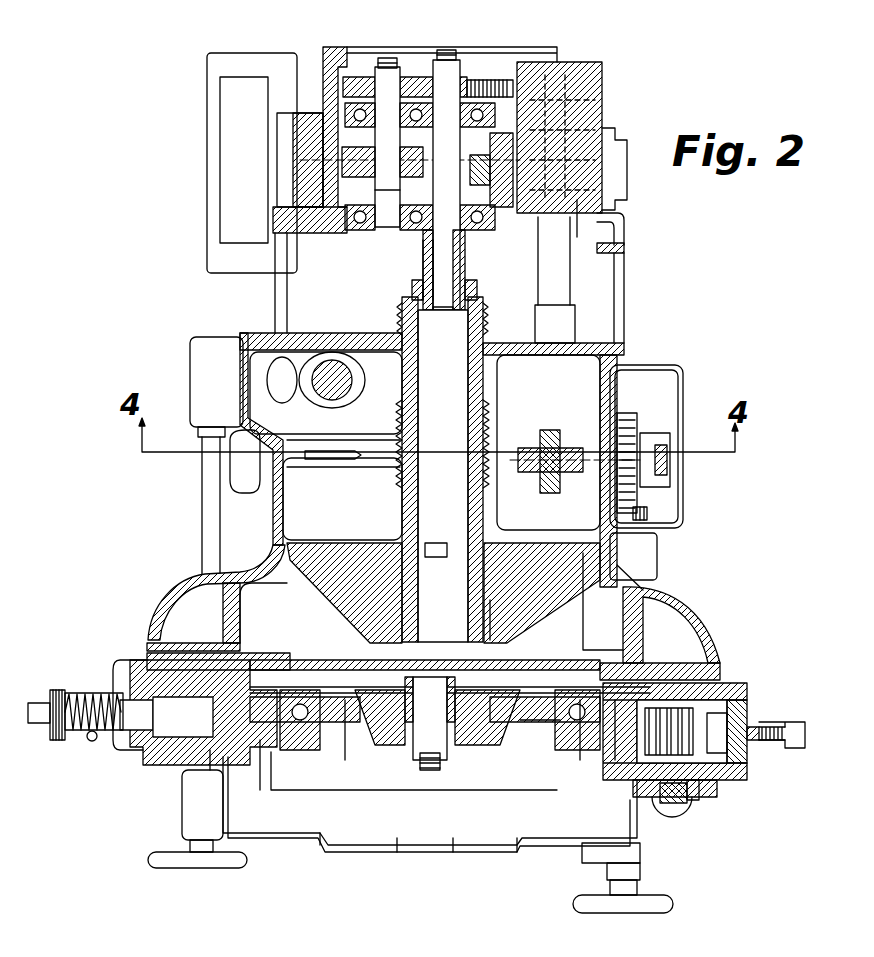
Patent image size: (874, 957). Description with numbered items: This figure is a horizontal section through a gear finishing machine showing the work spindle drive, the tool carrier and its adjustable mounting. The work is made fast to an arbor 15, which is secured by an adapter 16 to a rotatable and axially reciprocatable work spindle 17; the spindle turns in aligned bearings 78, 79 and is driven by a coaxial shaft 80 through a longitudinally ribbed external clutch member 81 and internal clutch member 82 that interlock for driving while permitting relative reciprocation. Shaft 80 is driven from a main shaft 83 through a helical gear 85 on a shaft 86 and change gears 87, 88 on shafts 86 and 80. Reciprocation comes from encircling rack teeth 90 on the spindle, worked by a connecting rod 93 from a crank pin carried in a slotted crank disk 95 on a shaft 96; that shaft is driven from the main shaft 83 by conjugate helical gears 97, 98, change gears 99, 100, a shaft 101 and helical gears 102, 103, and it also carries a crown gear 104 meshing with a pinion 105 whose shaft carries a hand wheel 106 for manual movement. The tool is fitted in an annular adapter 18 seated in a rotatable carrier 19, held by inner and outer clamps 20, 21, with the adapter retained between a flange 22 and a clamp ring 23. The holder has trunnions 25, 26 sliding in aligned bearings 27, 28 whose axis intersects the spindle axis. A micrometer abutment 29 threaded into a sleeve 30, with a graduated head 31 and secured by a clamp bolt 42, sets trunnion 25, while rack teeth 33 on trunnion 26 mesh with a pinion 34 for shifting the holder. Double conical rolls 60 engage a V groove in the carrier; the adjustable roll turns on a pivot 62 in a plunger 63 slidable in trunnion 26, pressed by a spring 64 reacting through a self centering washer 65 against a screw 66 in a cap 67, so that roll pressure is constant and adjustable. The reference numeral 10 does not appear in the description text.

The spindle shaft 10 is at (407, 730).
The arbor 15 is at (440, 768).
The adapter 16 is at (487, 622).
The work spindle 17 is at (410, 513).
The annular adapter 18 is at (330, 733).
The rotatable carrier 19 is at (547, 727).
The inner clamps 20 is at (345, 740).
The outer clamps 21 is at (343, 675).
The flange 22 is at (298, 690).
The clamp ring 23 is at (283, 773).
The trunnion 25 is at (190, 735).
The trunnion 26 is at (735, 781).
The bearing 27 is at (152, 757).
The bearing 28 is at (710, 797).
The abutment 29 is at (78, 728).
The sleeve 30 is at (89, 700).
The head 31 is at (60, 690).
The rack teeth 33 is at (692, 805).
The pinion 34 is at (676, 805).
The clamp bolt 42 is at (92, 742).
The rolls 60 is at (618, 727).
The pivot 62 is at (590, 733).
The plunger 63 is at (630, 760).
The spring 64 is at (712, 717).
The self centering washer 65 is at (743, 717).
The screw 66 is at (765, 727).
The cap 67 is at (750, 763).
The bearing 78 is at (400, 547).
The bearing 79 is at (400, 337).
The shaft 80 is at (445, 250).
The external clutch member 81 is at (430, 270).
The internal clutch member 82 is at (413, 292).
The main shaft 83 is at (337, 173).
The helical gear 85 is at (360, 153).
The shaft 86 is at (390, 197).
The change gear 87 is at (396, 82).
The change gear 88 is at (433, 77).
The rack teeth 90 is at (404, 425).
The connecting rod 93 is at (656, 446).
The crank disk 95 is at (632, 440).
The shaft 96 is at (340, 456).
The helical gear 97 is at (510, 207).
The helical gear 98 is at (497, 200).
The change gear 99 is at (491, 80).
The change gear 100 is at (566, 90).
The shaft 101 is at (552, 288).
The helical gear 102 is at (522, 448).
The helical gear 103 is at (550, 430).
The crown gear 104 is at (628, 440).
The pinion 105 is at (649, 511).
The hand wheel 106 is at (670, 908).